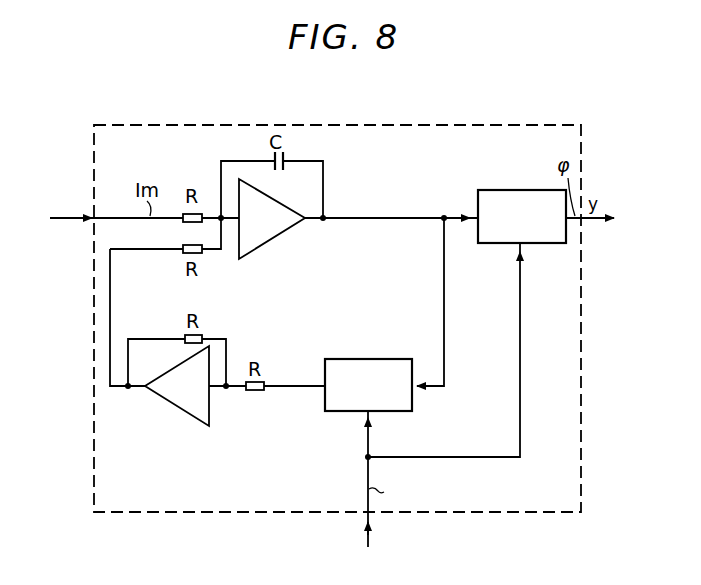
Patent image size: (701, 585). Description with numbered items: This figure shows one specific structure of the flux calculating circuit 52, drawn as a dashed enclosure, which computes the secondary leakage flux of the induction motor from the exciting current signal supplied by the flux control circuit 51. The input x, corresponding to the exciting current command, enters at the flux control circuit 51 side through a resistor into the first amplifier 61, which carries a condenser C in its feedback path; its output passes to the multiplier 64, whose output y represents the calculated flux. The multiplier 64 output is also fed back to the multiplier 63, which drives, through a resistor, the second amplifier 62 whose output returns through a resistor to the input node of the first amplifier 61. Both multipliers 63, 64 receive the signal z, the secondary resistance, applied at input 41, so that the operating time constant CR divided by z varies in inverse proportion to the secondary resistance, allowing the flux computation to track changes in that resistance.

The input terminal z (R+ΔR2 signal) 41 is at (437, 406).
The flux control circuit 51 is at (105, 211).
The flux calculating circuit 52 is at (582, 128).
The amplifier 61 is at (279, 236).
The amplifier 62 is at (176, 407).
The multiplier 63 is at (392, 358).
The multiplier 64 is at (521, 189).